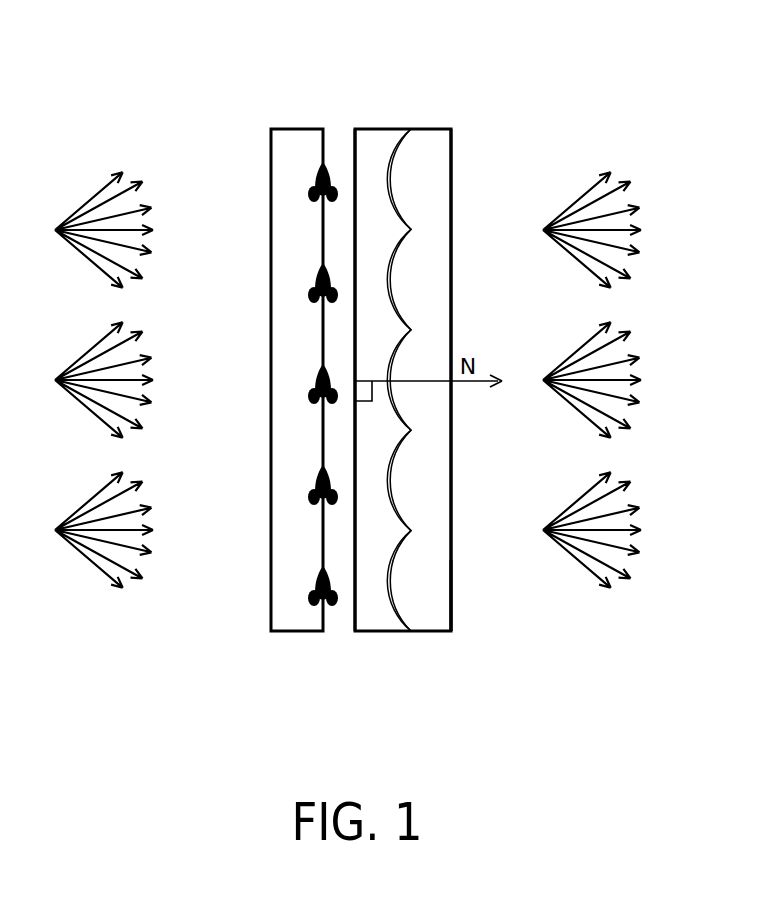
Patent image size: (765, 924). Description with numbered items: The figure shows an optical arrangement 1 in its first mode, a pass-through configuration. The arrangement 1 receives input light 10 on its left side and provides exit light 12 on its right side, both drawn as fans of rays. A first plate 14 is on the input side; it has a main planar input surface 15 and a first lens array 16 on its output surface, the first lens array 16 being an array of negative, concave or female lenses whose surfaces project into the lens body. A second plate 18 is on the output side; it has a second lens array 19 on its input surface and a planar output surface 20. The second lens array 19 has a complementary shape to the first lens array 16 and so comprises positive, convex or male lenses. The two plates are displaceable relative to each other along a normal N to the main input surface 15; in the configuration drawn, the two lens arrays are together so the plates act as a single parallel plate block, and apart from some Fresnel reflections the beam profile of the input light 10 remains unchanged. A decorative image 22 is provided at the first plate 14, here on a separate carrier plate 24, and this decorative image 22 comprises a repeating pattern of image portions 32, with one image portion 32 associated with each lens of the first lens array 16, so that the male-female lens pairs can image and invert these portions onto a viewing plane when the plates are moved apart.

The optical arrangement 1 is at (241, 636).
The input light 10 is at (87, 198).
The exit light 12 is at (573, 198).
The first plate 14 is at (371, 129).
The main planar input surface 15 is at (354, 152).
The first lens array 16 is at (385, 183).
The second plate 18 is at (433, 129).
The second lens array 19 is at (393, 593).
The planar output surface 20 is at (452, 598).
The decorative image 22 is at (339, 646).
The carrier plate 24 is at (298, 129).
The image portions 32 is at (312, 292).